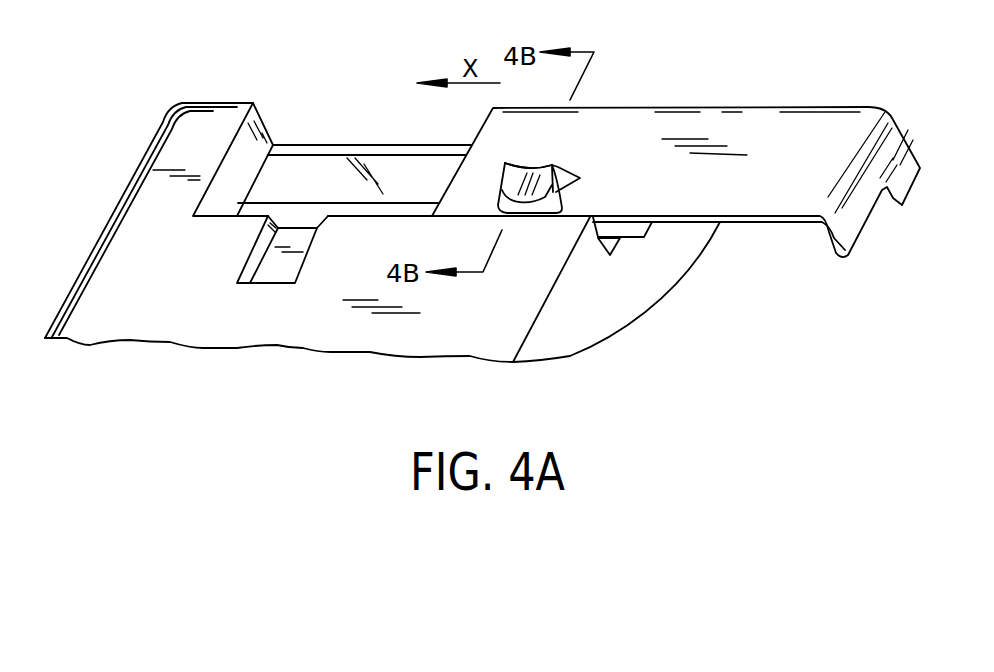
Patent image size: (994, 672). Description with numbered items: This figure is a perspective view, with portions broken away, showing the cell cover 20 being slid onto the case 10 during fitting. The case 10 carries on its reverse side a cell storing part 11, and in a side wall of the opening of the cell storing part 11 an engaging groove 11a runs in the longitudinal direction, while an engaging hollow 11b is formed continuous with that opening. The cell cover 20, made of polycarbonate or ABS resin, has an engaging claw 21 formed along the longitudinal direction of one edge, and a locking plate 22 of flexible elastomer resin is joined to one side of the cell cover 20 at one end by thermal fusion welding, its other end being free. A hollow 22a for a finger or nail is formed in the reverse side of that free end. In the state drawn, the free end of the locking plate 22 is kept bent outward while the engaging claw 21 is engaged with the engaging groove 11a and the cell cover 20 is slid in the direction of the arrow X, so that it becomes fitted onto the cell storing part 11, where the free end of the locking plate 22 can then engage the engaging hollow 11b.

The case 10 is at (132, 232).
The cell storing part 11 is at (328, 170).
The engaging groove 11a is at (590, 220).
The engaging hollow 11b is at (267, 280).
The cell cover 20 is at (747, 120).
The engaging claw 21 is at (652, 227).
The locking plate 22 is at (580, 178).
The hollow 22a is at (532, 167).